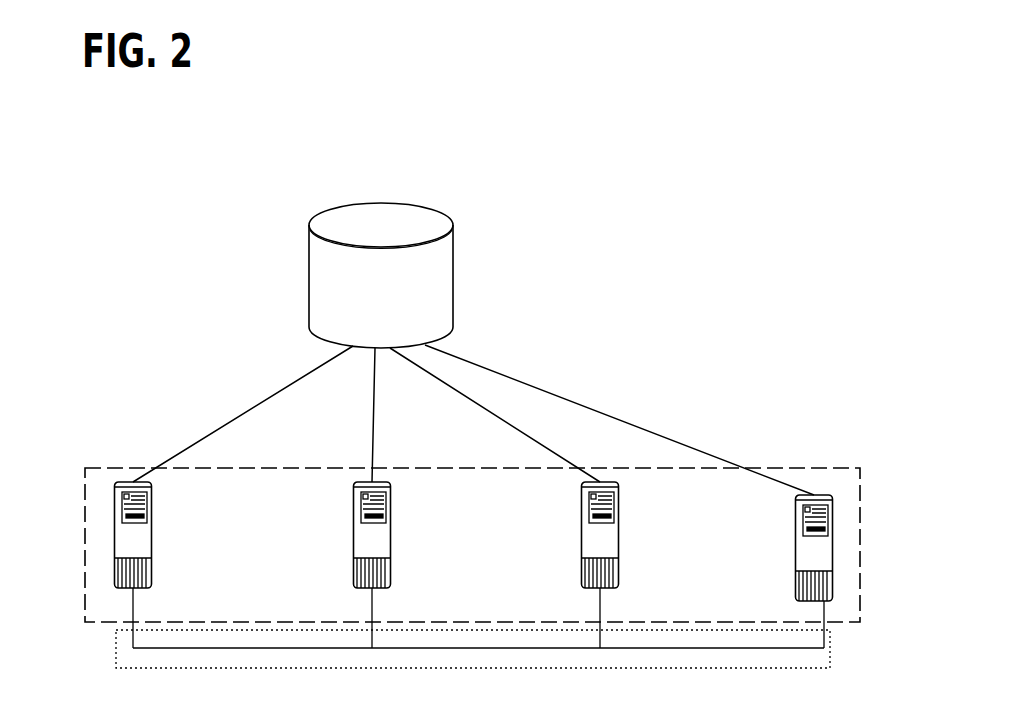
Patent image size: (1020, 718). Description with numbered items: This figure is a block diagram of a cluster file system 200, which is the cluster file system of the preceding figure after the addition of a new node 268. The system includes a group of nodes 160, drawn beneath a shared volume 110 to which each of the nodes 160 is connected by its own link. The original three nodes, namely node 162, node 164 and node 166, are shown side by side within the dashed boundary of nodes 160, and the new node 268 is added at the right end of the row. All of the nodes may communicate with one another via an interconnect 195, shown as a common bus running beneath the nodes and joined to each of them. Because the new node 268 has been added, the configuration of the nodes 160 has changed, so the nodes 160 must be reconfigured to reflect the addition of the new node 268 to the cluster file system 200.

The cluster file system 200 is at (580, 198).
The volume 110 is at (433, 210).
The nodes 160 is at (98, 468).
The node 162 is at (152, 506).
The node 164 is at (390, 506).
The node 166 is at (619, 506).
The new node 268 is at (833, 518).
The interconnect 195 is at (116, 648).